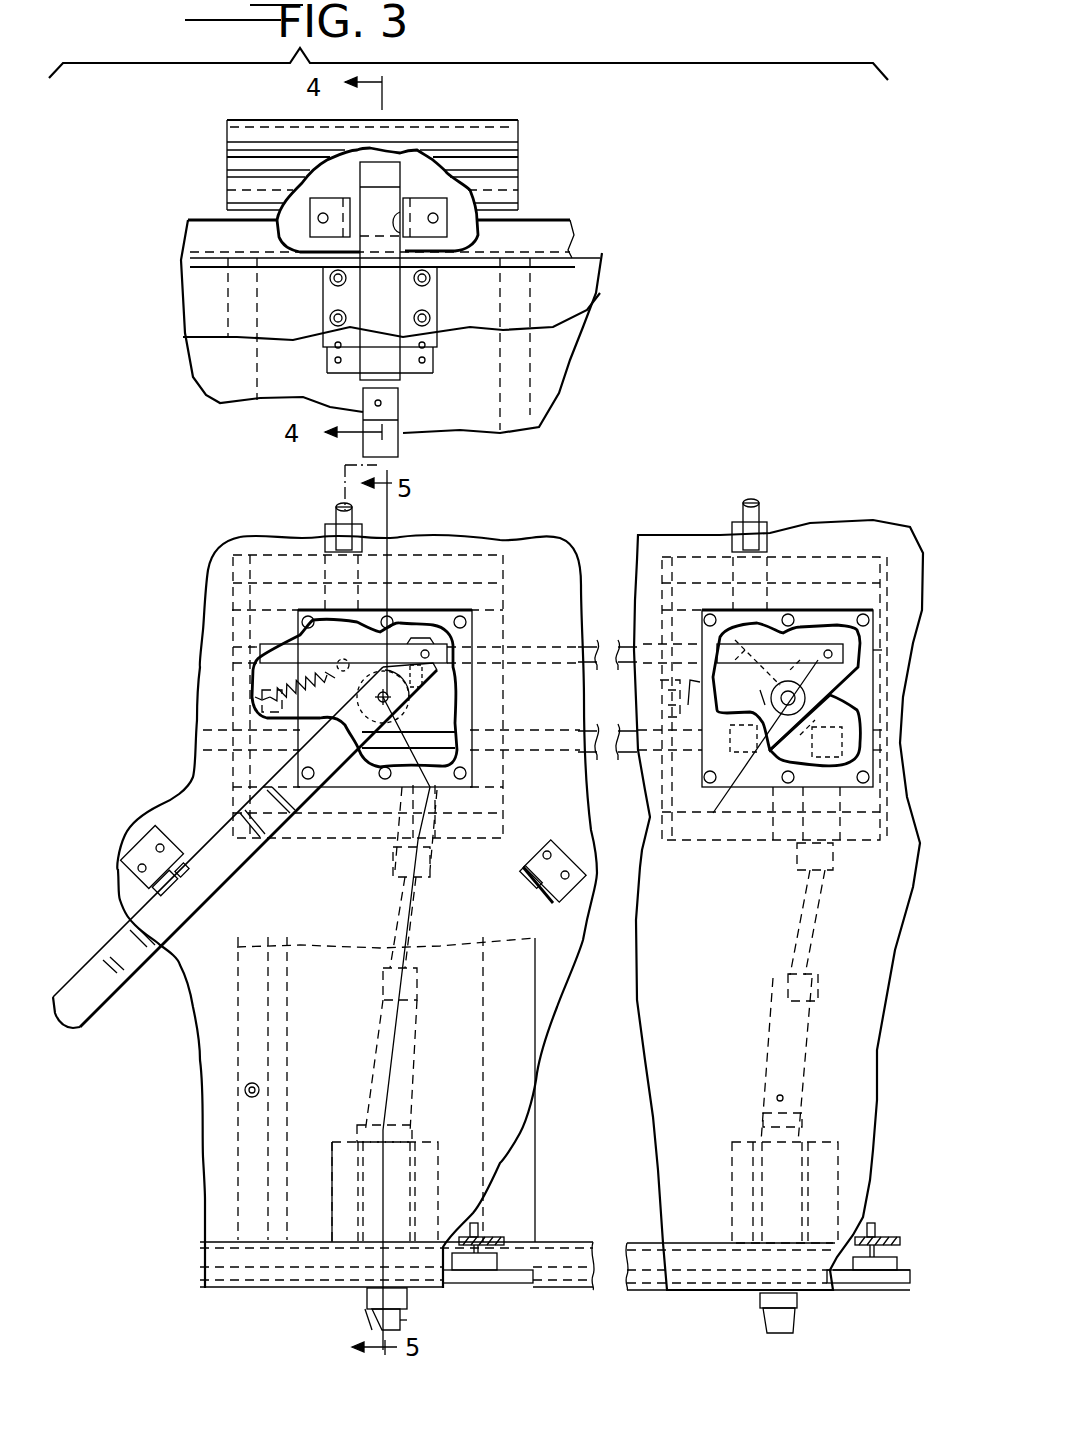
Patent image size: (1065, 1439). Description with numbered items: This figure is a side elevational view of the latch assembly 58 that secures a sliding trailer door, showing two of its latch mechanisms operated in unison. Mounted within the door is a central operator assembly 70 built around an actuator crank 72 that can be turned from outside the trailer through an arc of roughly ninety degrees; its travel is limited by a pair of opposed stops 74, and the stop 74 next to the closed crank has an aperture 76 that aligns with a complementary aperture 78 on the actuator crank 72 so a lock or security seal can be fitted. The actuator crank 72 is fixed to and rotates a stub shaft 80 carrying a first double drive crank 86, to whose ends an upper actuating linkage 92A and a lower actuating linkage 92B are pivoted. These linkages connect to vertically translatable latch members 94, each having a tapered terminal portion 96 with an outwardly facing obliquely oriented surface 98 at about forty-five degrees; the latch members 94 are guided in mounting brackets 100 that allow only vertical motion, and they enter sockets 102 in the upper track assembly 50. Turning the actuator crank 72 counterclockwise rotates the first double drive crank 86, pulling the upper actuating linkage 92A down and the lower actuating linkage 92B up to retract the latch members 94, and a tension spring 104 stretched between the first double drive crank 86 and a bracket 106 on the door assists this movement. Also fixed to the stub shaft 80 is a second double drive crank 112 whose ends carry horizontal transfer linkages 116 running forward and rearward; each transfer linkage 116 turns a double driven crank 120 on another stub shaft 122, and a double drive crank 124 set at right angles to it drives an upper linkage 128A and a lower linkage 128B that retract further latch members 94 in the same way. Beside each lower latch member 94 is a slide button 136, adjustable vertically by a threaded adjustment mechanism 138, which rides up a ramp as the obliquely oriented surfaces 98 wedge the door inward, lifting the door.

The upper track assembly 50 is at (548, 160).
The latch assembly 58 is at (750, 378).
The central operator assembly 70 is at (437, 688).
The actuator crank 72 is at (87, 1027).
The stops 74 is at (140, 837).
The aperture 76 is at (130, 890).
The aperture 78 is at (180, 890).
The stub shaft 80 is at (382, 702).
The first double drive crank 86 is at (357, 690).
The upper actuating linkage 92A is at (327, 520).
The lower actuating linkage 92B is at (400, 905).
The latch members 94 is at (370, 368).
The tapered terminal portion 96 is at (360, 167).
The obliquely oriented surface 98 is at (387, 173).
The mounting brackets 100 is at (433, 360).
The sockets 102 is at (460, 228).
The tension spring 104 is at (273, 647).
The bracket 106 is at (215, 703).
The second double drive crank 112 is at (422, 644).
The transfer linkages 116 is at (213, 680).
The double driven crank 120 is at (765, 744).
The stub shaft 122 is at (805, 702).
The double drive crank 124 is at (770, 805).
The upper linkage 128A is at (763, 513).
The lower linkage 128B is at (775, 990).
The slide button 136 is at (480, 1253).
The threaded adjustment mechanism 138 is at (480, 1228).